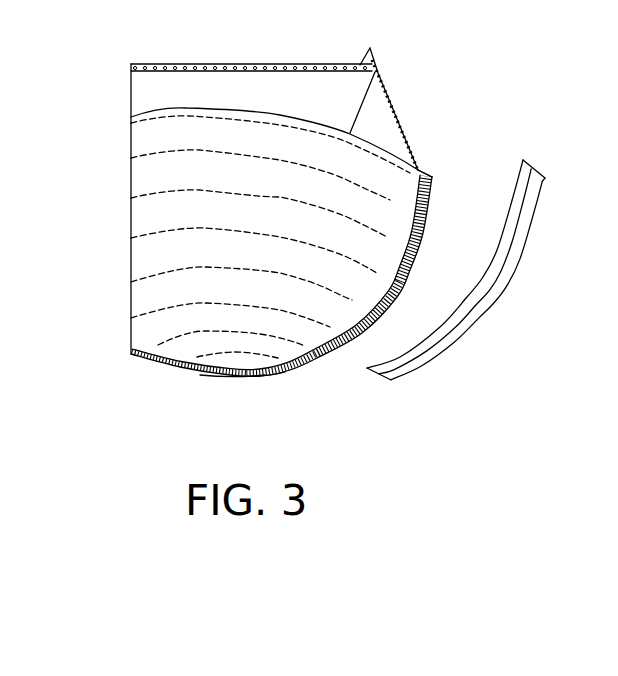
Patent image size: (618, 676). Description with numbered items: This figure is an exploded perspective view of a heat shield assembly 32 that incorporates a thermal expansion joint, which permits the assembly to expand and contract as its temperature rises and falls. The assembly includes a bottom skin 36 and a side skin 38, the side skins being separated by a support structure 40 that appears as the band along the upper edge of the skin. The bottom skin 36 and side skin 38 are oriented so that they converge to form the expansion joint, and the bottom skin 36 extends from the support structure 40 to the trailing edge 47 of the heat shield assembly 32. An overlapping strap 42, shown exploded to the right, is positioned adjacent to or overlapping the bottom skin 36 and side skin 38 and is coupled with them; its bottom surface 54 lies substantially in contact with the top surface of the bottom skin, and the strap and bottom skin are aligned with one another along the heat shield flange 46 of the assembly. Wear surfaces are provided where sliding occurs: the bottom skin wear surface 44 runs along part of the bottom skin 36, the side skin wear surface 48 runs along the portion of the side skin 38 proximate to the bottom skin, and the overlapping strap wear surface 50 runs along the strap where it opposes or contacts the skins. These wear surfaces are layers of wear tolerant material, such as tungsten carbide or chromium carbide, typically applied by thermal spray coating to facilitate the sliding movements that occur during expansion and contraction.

The heat shield assembly 32 is at (125, 376).
The bottom skin 36 is at (239, 367).
The side skin 38 is at (371, 48).
The support structure 40 is at (255, 87).
The overlapping strap 42 is at (478, 247).
The bottom skin wear surface 44 is at (458, 199).
The heat shield flange 46 is at (418, 238).
The trailing edge 47 is at (263, 375).
The side skin wear surface 48 is at (433, 158).
The overlapping strap wear surface 50 is at (500, 250).
The bottom surface 54 is at (497, 300).